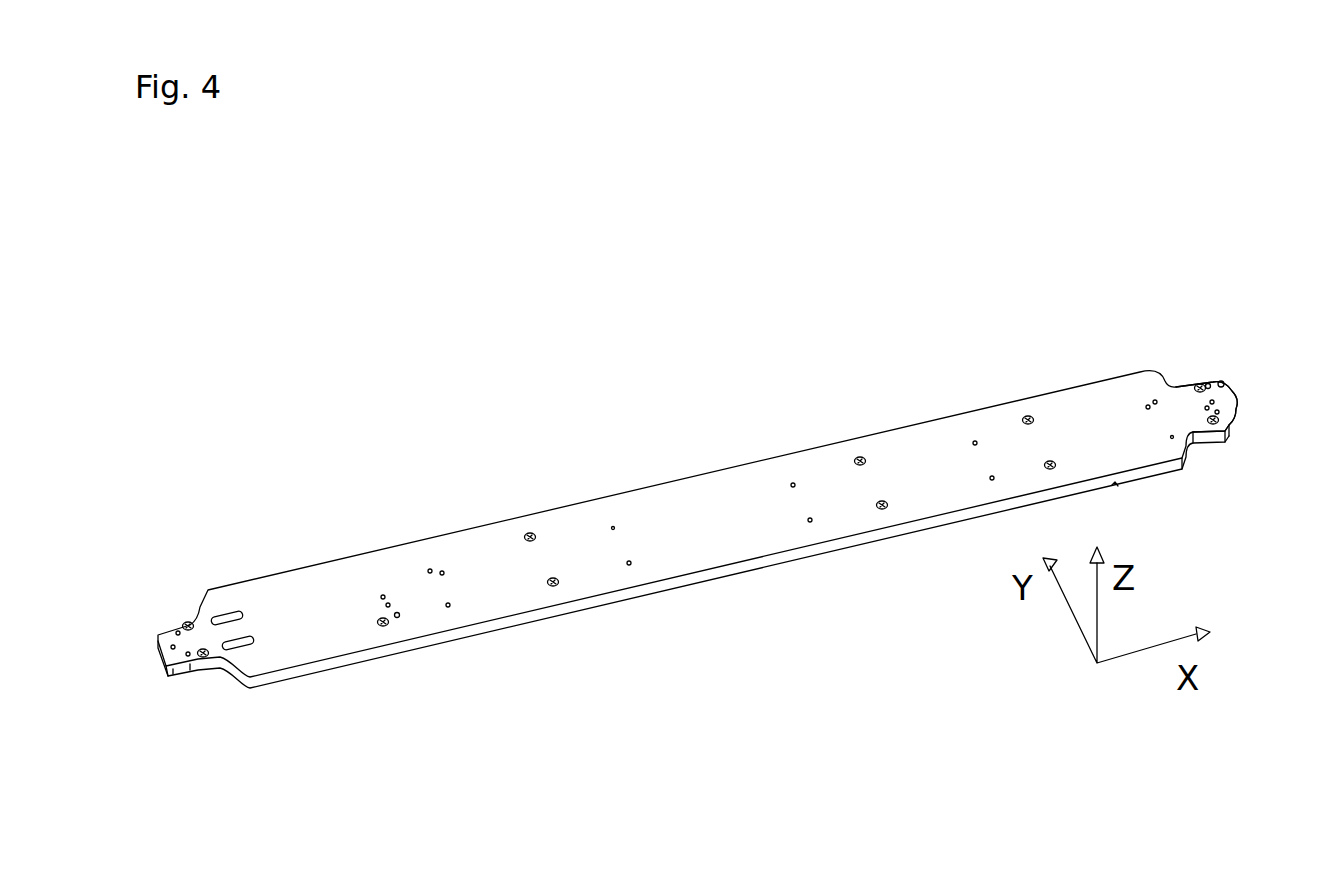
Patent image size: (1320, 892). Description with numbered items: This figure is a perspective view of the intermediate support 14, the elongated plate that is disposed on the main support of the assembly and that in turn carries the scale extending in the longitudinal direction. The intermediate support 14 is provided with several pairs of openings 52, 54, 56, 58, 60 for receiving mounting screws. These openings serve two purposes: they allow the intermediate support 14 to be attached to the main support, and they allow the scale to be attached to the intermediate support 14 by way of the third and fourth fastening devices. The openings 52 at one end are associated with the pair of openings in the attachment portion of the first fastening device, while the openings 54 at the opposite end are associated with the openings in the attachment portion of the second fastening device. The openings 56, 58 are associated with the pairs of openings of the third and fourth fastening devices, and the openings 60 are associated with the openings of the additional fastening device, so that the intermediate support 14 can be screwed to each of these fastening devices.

The intermediate support 14 is at (343, 662).
The openings 52 is at (1222, 433).
The openings 54 is at (182, 616).
The openings 56 is at (1208, 385).
The openings 58 is at (397, 615).
The openings 60 is at (884, 512).